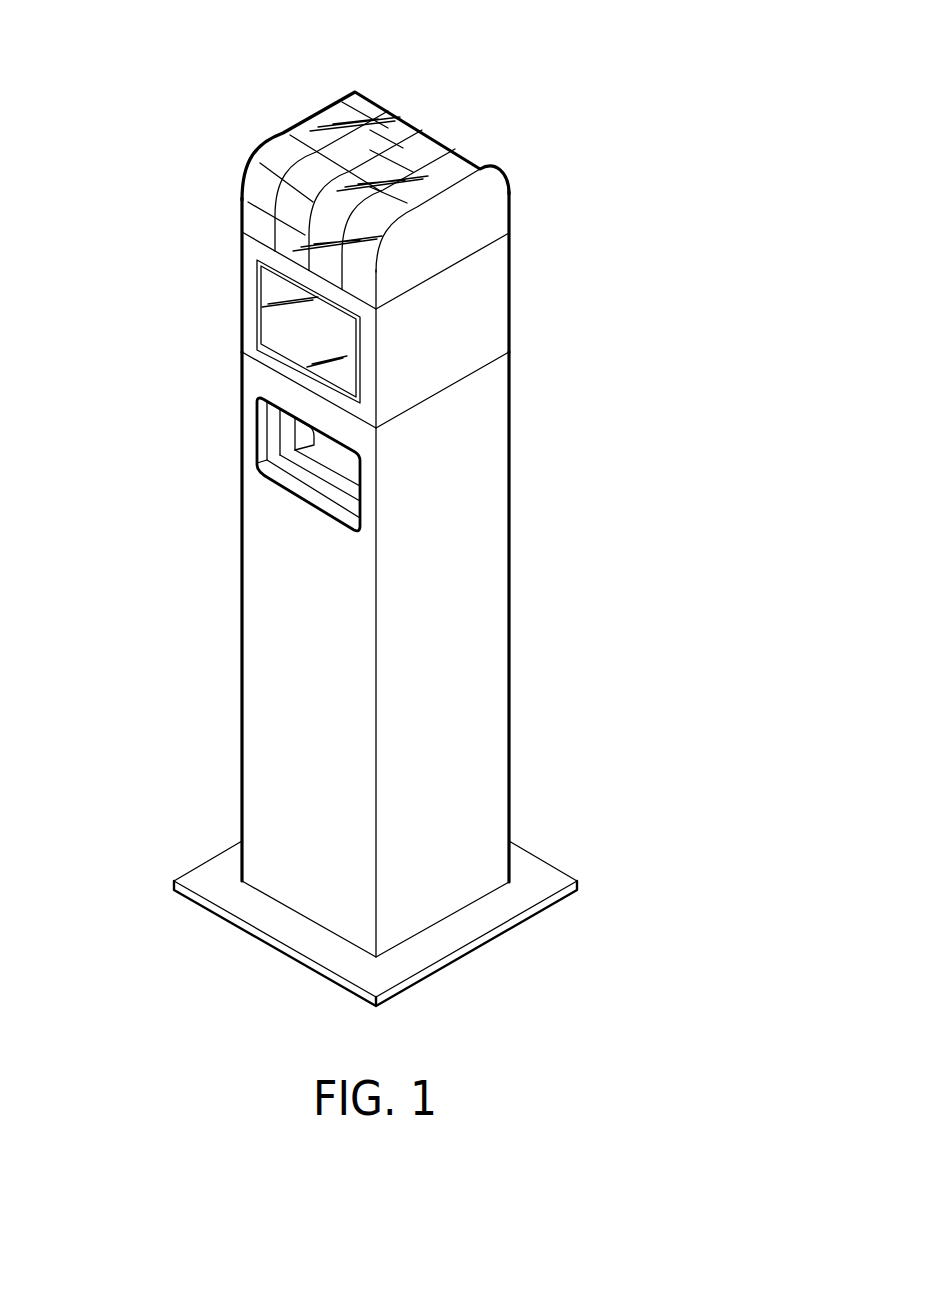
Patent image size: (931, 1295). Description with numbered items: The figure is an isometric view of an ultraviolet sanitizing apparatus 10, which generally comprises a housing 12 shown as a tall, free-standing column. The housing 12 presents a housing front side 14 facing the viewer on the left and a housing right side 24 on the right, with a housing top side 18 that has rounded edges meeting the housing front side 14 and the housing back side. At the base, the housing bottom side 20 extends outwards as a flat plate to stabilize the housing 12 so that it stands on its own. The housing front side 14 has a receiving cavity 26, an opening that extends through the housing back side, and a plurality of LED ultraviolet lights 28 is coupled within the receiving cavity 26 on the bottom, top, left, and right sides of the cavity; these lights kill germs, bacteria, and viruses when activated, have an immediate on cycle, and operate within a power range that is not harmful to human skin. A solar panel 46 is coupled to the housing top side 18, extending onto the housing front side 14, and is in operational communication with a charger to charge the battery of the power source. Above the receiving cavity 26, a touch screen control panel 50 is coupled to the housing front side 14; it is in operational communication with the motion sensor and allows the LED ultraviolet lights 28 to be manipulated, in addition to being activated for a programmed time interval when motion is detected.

The ultraviolet sanitizing apparatus 10 is at (692, 134).
The housing 12 is at (483, 397).
The housing front side 14 is at (275, 622).
The housing top side 18 is at (415, 187).
The housing bottom side 20 is at (483, 945).
The housing right side 24 is at (440, 595).
The receiving cavity 26 is at (292, 455).
The LED ultraviolet lights 28 is at (323, 483).
The solar panel 46 is at (313, 207).
The touch screen control panel 50 is at (285, 316).